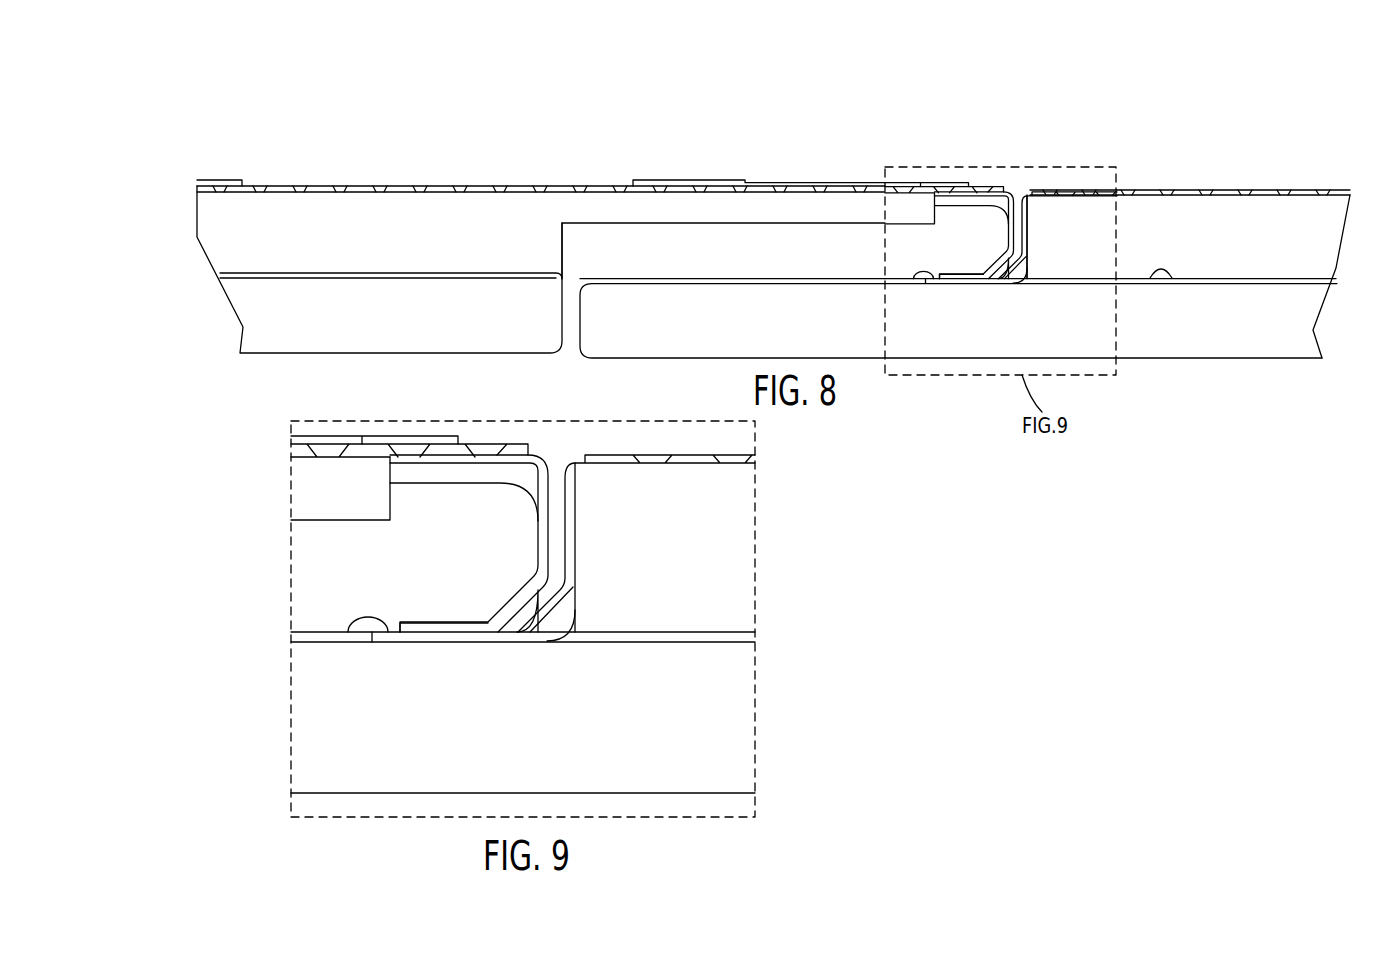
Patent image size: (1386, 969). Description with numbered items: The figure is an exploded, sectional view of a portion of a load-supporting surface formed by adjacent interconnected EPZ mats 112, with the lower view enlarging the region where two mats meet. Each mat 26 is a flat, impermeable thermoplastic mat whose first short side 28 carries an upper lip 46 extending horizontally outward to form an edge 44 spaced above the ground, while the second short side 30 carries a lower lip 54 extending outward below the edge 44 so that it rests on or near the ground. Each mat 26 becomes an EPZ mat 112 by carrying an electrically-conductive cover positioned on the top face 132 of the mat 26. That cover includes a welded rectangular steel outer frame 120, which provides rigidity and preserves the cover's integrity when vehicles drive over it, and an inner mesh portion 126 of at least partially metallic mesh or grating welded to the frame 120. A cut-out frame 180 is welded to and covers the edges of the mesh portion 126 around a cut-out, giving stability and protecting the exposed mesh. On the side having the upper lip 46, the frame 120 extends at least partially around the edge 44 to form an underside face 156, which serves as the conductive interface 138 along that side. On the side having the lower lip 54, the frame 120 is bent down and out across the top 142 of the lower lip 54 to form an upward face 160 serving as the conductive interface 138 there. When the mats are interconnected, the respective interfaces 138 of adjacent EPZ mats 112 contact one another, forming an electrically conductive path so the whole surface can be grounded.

In FIG. 8, the EPZ mat 112 is at (299, 128).
In FIG. 8, the mat 26 is at (528, 128).
In FIG. 8, the first short side 28 is at (809, 143).
In FIG. 8, the second short side 30 is at (1259, 138).
In FIG. 8, the outer frame 120 is at (350, 205).
In FIG. 9, the outer frame 120 is at (455, 445).
In FIG. 8, the inner mesh portion 126 is at (425, 186).
In FIG. 8, the cut-out frame 180 is at (645, 180).
In FIG. 8, the upper lip 46 is at (772, 243).
In FIG. 9, the upper lip 46 is at (291, 570).
In FIG. 8, the top of the lower lip 142 is at (703, 280).
In FIG. 9, the top of the lower lip 142 is at (318, 641).
In FIG. 8, the top face 132 is at (952, 195).
In FIG. 8, the conductive interface 138 is at (1150, 272).
In FIG. 9, the conductive interface 138 is at (396, 627).
In FIG. 8, the upward face 160 is at (1302, 278).
In FIG. 9, the upward face 160 is at (360, 620).
In FIG. 8, the lower lip 54 is at (865, 358).
In FIG. 9, the lower lip 54 is at (291, 708).
In FIG. 9, the edge 44 is at (540, 528).
In FIG. 9, the underside face 156 is at (443, 632).